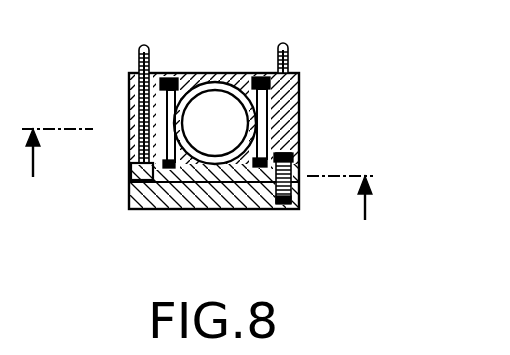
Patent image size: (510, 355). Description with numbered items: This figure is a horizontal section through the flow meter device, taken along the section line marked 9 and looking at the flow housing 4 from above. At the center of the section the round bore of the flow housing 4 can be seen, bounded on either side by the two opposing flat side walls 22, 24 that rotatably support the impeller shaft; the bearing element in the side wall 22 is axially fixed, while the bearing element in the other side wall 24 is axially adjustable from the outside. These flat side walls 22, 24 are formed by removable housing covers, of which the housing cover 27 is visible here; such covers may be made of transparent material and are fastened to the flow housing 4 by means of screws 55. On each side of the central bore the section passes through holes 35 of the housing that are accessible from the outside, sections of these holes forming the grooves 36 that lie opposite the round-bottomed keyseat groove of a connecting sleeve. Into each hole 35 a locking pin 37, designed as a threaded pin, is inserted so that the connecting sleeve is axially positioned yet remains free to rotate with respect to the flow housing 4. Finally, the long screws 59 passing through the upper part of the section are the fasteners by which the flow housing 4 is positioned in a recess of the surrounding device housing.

The flow housing 4 is at (299, 139).
The flat side wall 22 is at (228, 73).
The flat side wall 24 is at (214, 222).
The housing cover 27 is at (207, 209).
The hole 35 is at (227, 132).
The groove 36 is at (166, 140).
The locking pin 37 is at (162, 101).
The screw 55 is at (300, 167).
The screw 59 is at (148, 54).
The section line IX-IX 9 is at (197, 191).